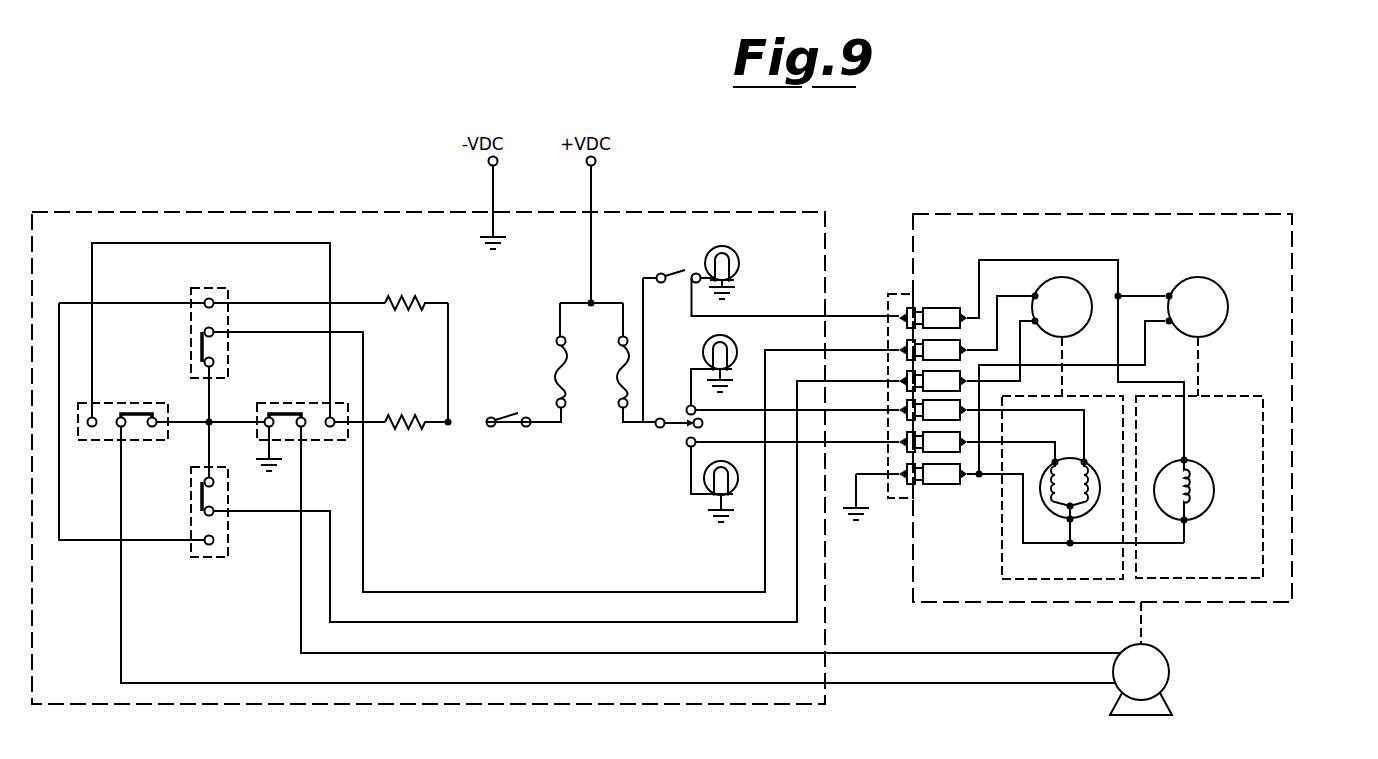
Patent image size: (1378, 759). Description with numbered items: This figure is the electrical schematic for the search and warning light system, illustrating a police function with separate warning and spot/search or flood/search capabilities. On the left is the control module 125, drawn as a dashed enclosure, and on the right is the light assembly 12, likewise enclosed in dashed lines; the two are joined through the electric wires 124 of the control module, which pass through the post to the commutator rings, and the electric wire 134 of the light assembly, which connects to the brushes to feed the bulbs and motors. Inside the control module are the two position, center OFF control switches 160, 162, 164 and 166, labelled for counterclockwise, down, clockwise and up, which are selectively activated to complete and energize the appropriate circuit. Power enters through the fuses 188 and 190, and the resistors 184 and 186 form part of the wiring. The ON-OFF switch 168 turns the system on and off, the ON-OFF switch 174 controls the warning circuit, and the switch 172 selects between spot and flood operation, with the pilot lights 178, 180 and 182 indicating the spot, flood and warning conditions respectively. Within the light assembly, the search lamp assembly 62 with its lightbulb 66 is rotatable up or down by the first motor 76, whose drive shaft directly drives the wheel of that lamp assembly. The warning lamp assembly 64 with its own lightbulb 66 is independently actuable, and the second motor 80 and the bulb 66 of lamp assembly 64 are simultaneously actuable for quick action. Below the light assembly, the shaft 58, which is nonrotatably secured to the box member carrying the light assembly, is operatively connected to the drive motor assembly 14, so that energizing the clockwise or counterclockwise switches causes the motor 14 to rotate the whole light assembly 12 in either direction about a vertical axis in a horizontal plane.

The light assembly 12 is at (1296, 324).
The drive motor assembly 14 is at (1162, 650).
The shaft 58 is at (1143, 628).
The first lamp assembly 62 is at (1002, 548).
The second lamp assembly 64 is at (1218, 579).
The lightbulb 66 is at (1075, 520).
The first motor 76 is at (1080, 333).
The second motor 80 is at (1219, 331).
The electric wires 124 is at (866, 308).
The control module 125 is at (258, 213).
The electric wire 134 is at (1015, 296).
The control switch 160 is at (132, 441).
The control switch 162 is at (230, 556).
The control switch 164 is at (308, 441).
The control switch 166 is at (231, 377).
The ON-OFF switch 168 is at (507, 433).
The switch 172 is at (671, 432).
The ON-OFF switch 174 is at (688, 283).
The pilot light 178 is at (705, 350).
The pilot light 180 is at (737, 487).
The pilot light 182 is at (738, 256).
The resistor 184 is at (402, 297).
The resistor 186 is at (390, 412).
The fuse 188 is at (557, 360).
The fuse 190 is at (620, 360).